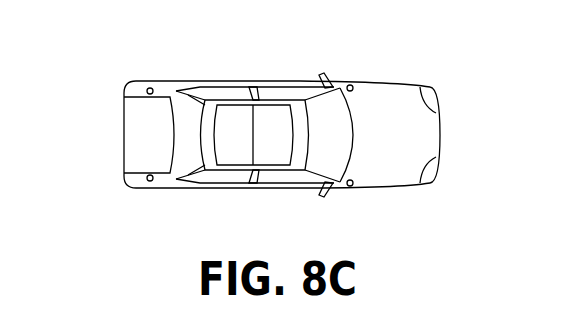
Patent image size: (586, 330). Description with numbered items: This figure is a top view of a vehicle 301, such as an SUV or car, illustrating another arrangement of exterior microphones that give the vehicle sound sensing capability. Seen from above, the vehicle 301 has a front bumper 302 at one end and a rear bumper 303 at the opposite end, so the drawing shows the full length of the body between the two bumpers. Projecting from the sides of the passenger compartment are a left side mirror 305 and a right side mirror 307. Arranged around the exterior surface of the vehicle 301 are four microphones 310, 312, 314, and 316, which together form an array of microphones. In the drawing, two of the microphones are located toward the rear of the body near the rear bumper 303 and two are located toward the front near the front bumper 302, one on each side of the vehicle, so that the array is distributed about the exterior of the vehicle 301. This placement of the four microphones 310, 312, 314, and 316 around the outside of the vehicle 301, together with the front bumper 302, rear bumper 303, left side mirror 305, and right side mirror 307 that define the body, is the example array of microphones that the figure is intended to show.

The vehicle 301 is at (437, 53).
The front bumper 302 is at (443, 133).
The rear bumper 303 is at (123, 128).
The left side mirror 305 is at (326, 75).
The right side mirror 307 is at (325, 199).
The microphone 310 is at (150, 88).
The microphone 312 is at (350, 85).
The microphone 314 is at (150, 181).
The microphone 316 is at (350, 186).